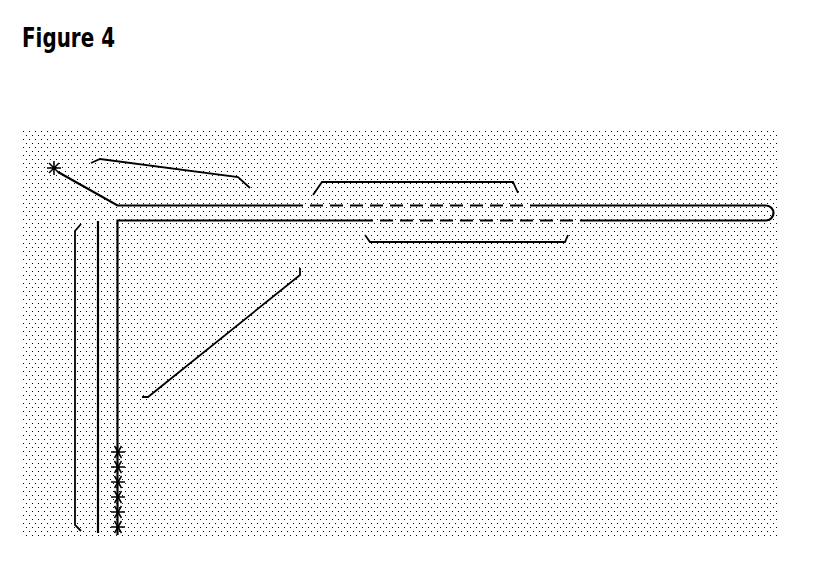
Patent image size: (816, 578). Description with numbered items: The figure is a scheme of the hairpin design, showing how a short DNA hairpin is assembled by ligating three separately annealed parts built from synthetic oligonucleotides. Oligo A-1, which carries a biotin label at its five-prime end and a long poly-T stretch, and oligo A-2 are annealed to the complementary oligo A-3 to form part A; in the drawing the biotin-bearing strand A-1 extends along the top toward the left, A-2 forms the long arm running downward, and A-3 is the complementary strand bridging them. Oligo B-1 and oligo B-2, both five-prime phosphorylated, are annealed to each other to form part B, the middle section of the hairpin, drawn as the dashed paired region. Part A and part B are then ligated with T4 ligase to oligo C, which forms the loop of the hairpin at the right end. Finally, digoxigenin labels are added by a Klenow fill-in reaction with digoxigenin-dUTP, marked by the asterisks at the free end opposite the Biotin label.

The oligo A-1 is at (170, 163).
The oligo A-2 is at (52, 377).
The oligo A-3 is at (221, 332).
The oligo B-1 is at (415, 176).
The oligo B-2 is at (466, 250).
The oligo C is at (657, 197).
The biotin Biotin is at (55, 157).